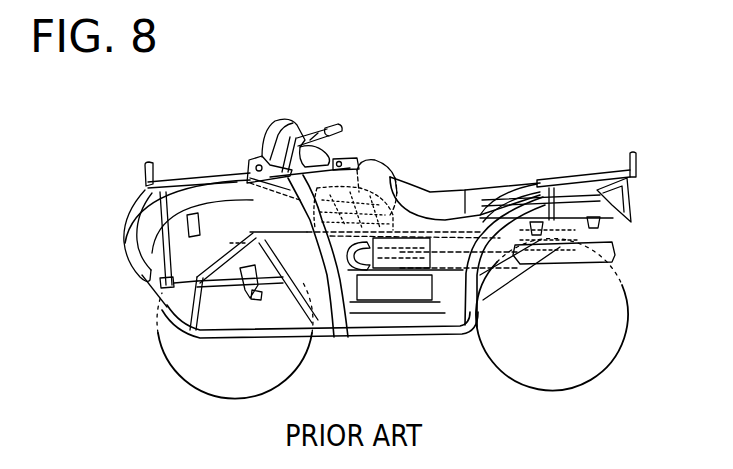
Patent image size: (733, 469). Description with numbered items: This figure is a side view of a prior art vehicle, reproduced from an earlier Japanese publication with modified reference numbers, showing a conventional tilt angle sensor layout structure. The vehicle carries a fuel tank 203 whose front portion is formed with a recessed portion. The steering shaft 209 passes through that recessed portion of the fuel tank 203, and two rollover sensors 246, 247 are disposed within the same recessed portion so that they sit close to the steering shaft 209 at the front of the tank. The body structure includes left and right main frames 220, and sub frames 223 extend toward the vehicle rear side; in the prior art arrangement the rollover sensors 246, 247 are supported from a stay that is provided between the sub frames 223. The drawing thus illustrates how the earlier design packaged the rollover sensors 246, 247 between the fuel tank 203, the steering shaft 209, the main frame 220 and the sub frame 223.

The fuel tank 203 is at (382, 168).
The steering shaft 209 is at (265, 253).
The main frame 220 is at (217, 228).
The sub frame 223 is at (258, 203).
The rollover sensor 246 is at (333, 167).
The rollover sensor 247 is at (394, 127).